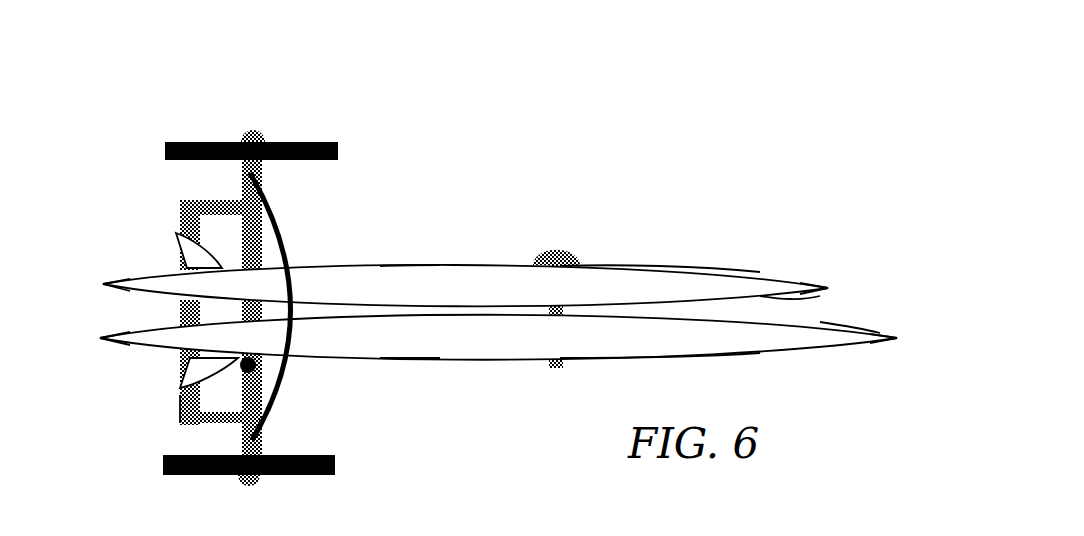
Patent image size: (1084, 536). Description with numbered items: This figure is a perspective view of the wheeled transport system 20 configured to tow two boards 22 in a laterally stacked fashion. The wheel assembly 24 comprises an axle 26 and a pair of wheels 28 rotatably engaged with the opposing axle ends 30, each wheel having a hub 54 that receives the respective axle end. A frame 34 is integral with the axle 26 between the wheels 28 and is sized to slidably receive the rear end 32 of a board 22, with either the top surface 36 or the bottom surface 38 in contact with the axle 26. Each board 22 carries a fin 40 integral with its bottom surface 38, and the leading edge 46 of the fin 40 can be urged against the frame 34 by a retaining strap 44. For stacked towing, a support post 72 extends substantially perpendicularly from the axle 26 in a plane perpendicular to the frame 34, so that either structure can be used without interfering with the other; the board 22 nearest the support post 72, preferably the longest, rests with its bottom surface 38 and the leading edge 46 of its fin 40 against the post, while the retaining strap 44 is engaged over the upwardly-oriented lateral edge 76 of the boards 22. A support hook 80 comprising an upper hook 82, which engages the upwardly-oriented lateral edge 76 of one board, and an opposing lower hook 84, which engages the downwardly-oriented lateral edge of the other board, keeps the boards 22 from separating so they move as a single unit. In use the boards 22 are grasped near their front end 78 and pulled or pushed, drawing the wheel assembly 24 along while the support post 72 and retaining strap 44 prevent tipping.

The wheeled transport system 20 is at (374, 99).
The board 22 is at (452, 254).
The wheel assembly 24 is at (147, 134).
The axle 26 is at (264, 248).
The wheel 28 is at (338, 150).
The axle end 30 is at (240, 168).
The rear end of board 32 is at (103, 283).
The frame 34 is at (164, 407).
The top surface of board 36 is at (790, 300).
The bottom surface of board 38 is at (660, 266).
The fin 40 is at (163, 247).
The retaining strap 44 is at (268, 405).
The leading edge of fin 46 is at (206, 255).
The hub 54 is at (255, 128).
The support post 72 is at (263, 367).
The upwardly-oriented lateral edge of board 76 is at (423, 285).
The front end of board 78 is at (828, 287).
The support hook 80 is at (565, 241).
The upper hook 82 is at (552, 368).
The lower hook 84 is at (545, 250).